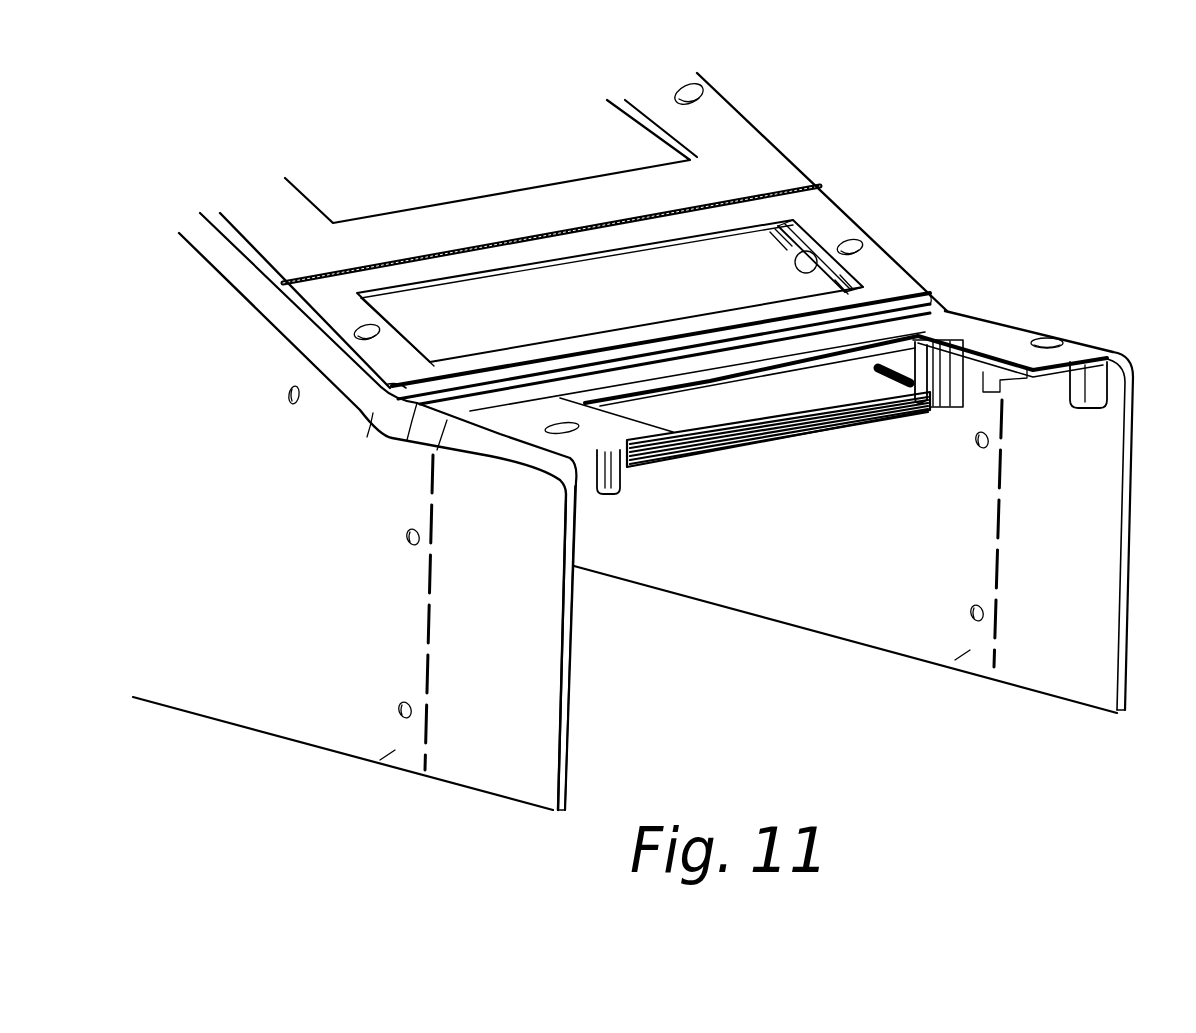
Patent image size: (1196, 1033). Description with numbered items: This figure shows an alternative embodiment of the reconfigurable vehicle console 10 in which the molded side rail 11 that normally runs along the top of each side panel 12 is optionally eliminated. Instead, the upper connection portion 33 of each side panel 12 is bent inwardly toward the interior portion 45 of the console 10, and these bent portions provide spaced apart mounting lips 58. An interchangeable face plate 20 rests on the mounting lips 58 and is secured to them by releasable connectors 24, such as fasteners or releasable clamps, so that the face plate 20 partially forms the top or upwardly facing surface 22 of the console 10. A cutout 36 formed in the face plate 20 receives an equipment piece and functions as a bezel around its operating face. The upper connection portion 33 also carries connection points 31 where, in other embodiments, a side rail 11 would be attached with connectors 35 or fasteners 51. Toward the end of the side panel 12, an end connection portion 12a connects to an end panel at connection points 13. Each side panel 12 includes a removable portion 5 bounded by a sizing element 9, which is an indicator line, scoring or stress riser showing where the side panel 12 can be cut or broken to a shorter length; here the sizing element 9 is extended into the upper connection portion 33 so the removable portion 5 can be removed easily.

The removable portion 5 is at (490, 785).
The sizing element 9 is at (422, 757).
The reconfigurable vehicle console 10 is at (531, 124).
The side rail 11 is at (247, 290).
The side panel 12 is at (276, 657).
The end connection portion 12a is at (387, 753).
The connection point 13 is at (407, 534).
The face plate 20 is at (820, 215).
The upwardly facing surface 22 is at (983, 214).
The releasable connector 24 is at (862, 250).
The connection point 31 is at (299, 403).
The upper connection portion 33 is at (522, 455).
The connector 35 is at (290, 406).
The cutout 36 is at (592, 262).
The interior portion 45 is at (753, 292).
The fastener 51 is at (530, 565).
The mounting lip 58 is at (588, 450).